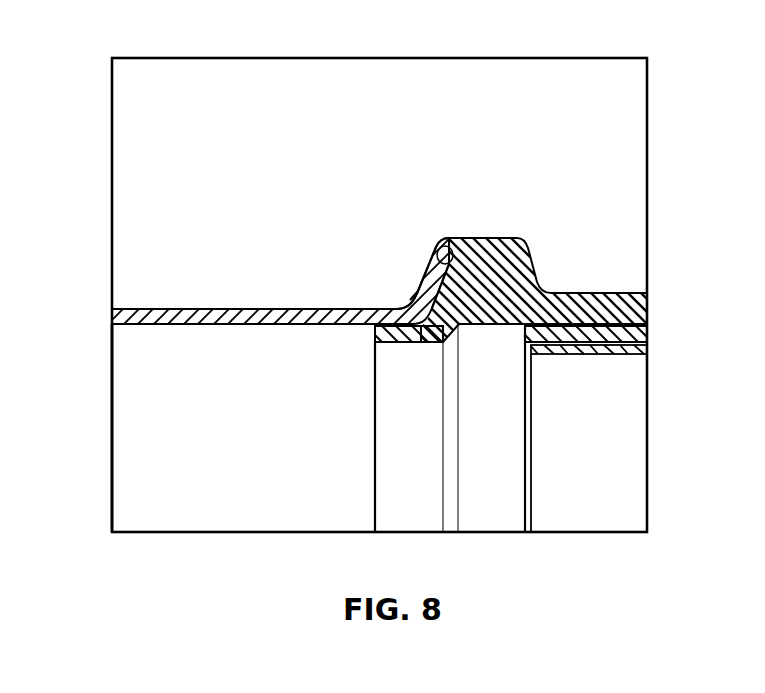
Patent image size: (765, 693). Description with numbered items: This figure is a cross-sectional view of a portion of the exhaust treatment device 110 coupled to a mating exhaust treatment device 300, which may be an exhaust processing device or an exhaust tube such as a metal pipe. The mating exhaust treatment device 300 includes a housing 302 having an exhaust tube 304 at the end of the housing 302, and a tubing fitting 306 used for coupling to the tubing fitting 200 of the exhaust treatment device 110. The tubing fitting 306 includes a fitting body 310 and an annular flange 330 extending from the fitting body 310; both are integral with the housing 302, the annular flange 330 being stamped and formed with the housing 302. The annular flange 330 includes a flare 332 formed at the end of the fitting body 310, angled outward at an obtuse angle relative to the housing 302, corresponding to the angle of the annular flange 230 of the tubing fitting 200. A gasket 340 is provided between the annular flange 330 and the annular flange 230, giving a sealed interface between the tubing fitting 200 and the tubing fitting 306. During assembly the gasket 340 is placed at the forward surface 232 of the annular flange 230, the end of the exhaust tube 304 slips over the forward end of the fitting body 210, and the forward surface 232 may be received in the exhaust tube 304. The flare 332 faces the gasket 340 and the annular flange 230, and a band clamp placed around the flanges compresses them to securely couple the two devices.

The exhaust treatment device 110 is at (590, 282).
The tubing fitting 200 is at (531, 253).
The fitting body 210 is at (615, 306).
The annular flange 230 is at (532, 258).
The forward surface 232 is at (444, 243).
The mating exhaust treatment device 300 is at (147, 293).
The housing 302 is at (175, 325).
The exhaust tube 304 is at (279, 440).
The tubing fitting 306 is at (380, 297).
The fitting body 310 is at (424, 273).
The annular flange 330 is at (439, 240).
The flare 332 is at (402, 290).
The gasket 340 is at (441, 291).